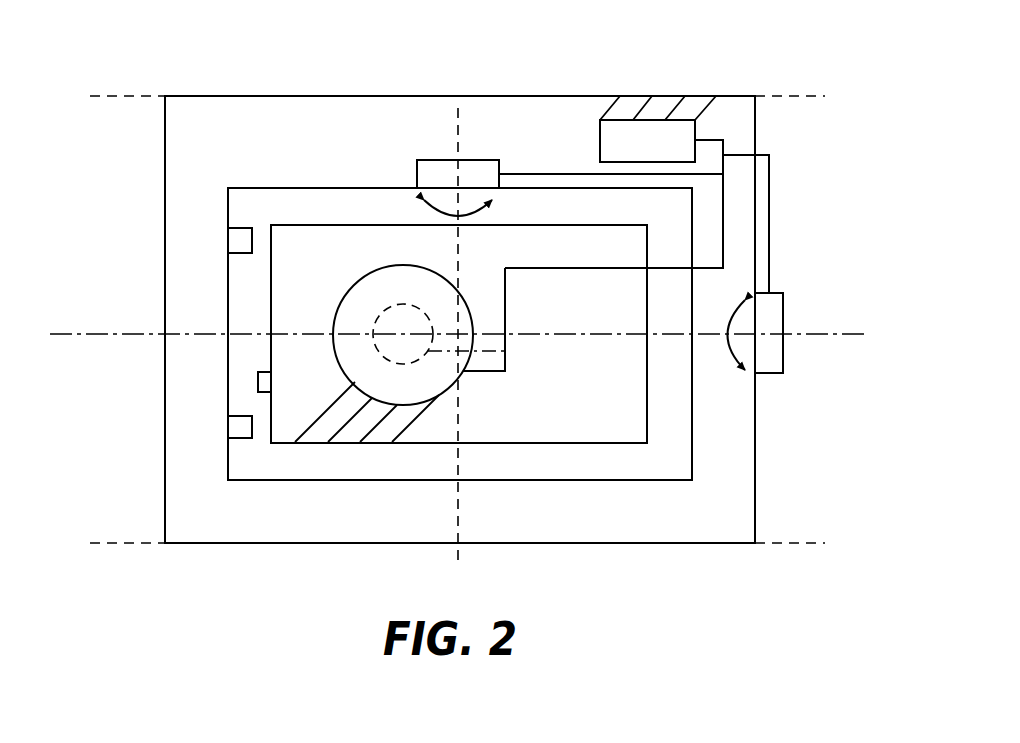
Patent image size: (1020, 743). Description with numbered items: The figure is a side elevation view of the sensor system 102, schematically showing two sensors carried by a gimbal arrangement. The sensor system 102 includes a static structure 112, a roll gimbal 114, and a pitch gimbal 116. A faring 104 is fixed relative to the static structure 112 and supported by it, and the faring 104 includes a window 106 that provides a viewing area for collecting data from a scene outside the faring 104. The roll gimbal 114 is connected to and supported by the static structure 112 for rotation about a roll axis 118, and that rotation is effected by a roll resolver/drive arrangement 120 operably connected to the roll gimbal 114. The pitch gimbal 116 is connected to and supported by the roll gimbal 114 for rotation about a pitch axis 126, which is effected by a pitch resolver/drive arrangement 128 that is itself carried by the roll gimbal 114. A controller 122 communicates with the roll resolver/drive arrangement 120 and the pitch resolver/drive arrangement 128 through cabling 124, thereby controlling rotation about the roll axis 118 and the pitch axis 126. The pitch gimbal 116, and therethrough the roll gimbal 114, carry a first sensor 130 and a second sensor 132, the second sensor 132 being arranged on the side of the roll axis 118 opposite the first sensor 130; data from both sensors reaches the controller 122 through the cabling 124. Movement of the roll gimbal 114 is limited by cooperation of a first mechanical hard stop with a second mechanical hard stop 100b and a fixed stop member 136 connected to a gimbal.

The sensor system 102 is at (172, 592).
The faring 104 is at (707, 543).
The window 106 is at (237, 228).
The static structure 112 is at (165, 403).
The roll gimbal 114 is at (615, 480).
The pitch gimbal 116 is at (288, 443).
The roll axis 118 is at (77, 333).
The roll resolver/drive arrangement 120 is at (783, 313).
The controller 122 is at (600, 137).
The cabling 124 is at (770, 208).
The pitch axis 126 is at (458, 127).
The pitch resolver/drive arrangement 128 is at (432, 160).
The first sensor 130 is at (452, 387).
The second sensor 132 is at (403, 305).
The fixed stop member 136 is at (258, 380).
The second mechanical hard stop 100b is at (232, 440).